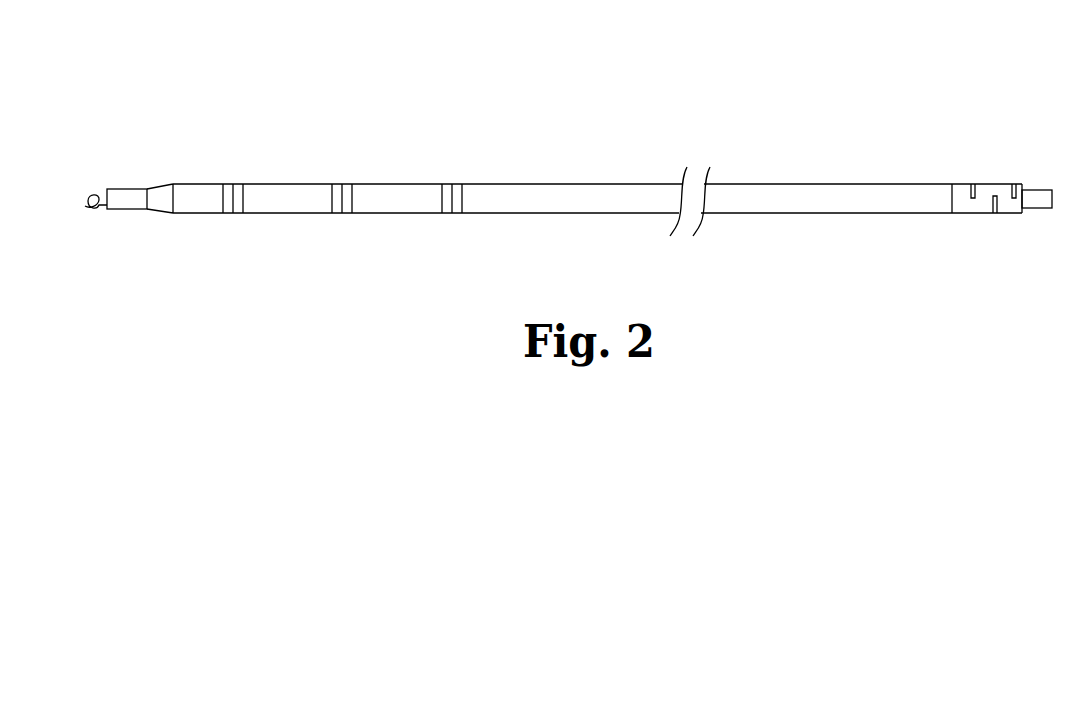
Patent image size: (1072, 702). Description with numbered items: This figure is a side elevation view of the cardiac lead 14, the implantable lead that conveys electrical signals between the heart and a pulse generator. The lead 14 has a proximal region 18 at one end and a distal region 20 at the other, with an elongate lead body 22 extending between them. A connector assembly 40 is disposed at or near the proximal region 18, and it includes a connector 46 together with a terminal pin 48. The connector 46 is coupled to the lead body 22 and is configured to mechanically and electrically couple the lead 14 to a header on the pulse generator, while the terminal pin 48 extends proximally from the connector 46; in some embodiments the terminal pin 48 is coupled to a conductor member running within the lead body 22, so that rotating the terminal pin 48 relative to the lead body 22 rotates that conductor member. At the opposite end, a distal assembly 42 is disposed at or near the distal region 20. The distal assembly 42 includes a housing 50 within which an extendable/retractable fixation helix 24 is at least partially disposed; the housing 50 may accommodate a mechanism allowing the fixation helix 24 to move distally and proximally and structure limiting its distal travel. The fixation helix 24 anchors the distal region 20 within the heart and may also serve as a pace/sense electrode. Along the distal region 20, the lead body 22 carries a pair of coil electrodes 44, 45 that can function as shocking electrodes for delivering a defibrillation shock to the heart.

The cardiac lead 14 is at (572, 62).
The proximal region 18 is at (900, 103).
The distal assembly 42 is at (142, 155).
The fixation helix 24 is at (88, 204).
The housing 50 is at (125, 203).
The distal region 20 is at (237, 232).
The lead body 22 is at (586, 205).
The coil electrode 44 is at (293, 190).
The coil electrode 45 is at (398, 195).
The connector 46 is at (988, 183).
The terminal pin 48 is at (1040, 190).
The connector assembly 40 is at (996, 232).